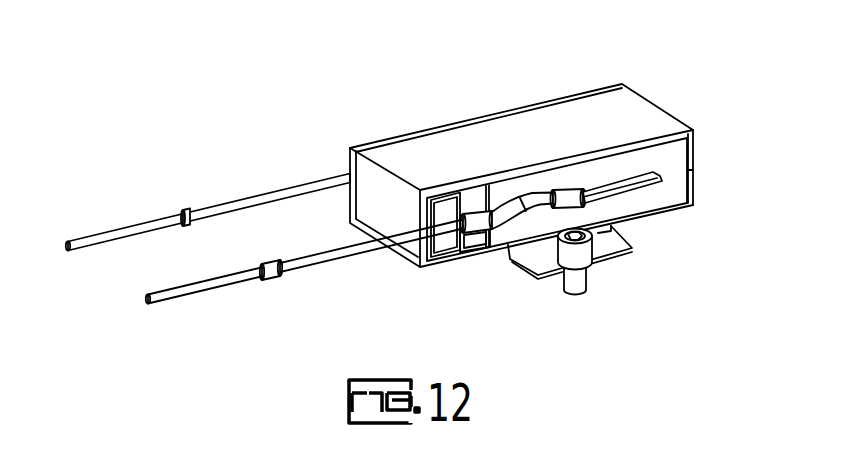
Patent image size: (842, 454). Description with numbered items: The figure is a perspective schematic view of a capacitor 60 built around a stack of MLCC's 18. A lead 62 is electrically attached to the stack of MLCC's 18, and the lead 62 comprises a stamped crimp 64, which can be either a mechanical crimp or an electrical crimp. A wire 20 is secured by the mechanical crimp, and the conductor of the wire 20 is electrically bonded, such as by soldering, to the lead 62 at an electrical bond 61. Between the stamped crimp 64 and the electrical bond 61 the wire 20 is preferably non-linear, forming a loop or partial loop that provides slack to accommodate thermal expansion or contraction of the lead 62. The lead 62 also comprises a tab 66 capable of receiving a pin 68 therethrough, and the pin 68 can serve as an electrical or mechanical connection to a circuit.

The stack of MLCC's 18 is at (397, 158).
The wire 20 is at (269, 264).
The capacitor 60 is at (553, 189).
The electrical bond 61 is at (620, 189).
The lead 62 is at (538, 219).
The stamped crimp 64 is at (458, 233).
The tab 66 is at (635, 252).
The pin 68 is at (585, 256).